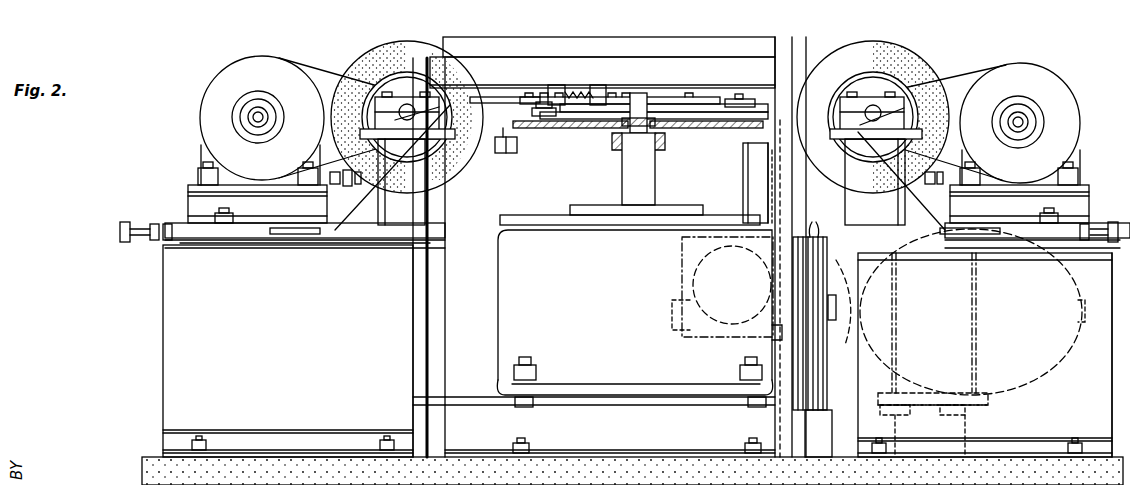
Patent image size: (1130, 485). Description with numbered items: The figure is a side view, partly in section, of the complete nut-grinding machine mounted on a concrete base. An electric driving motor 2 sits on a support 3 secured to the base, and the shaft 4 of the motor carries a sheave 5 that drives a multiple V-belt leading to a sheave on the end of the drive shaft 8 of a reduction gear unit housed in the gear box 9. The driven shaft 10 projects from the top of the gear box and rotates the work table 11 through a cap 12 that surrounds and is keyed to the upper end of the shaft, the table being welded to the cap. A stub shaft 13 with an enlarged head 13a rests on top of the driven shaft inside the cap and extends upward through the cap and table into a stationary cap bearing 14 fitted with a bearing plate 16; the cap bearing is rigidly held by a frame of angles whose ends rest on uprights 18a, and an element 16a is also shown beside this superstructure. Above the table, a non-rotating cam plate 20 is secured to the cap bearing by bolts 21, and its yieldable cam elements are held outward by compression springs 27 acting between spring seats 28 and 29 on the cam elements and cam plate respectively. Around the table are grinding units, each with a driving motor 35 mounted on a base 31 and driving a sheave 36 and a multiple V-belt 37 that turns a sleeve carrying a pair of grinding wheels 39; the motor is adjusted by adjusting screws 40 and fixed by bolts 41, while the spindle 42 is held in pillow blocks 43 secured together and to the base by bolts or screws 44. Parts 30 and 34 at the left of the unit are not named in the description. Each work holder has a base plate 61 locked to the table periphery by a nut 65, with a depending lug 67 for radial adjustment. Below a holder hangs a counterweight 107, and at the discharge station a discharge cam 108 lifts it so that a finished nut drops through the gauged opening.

The electric driving motor 2 is at (1028, 380).
The support 3 is at (972, 412).
The shaft 4 is at (836, 308).
The sheave 5 is at (1090, 350).
The drive shaft 8 is at (780, 338).
The gear box 9 is at (515, 299).
The driven shaft 10 is at (633, 192).
The work table 11 is at (588, 128).
The cap 12 is at (660, 148).
The stub shaft 13 is at (648, 100).
The enlarged head 13a is at (662, 138).
The stationary cap bearing 14 is at (640, 95).
The bearing plate 16 is at (612, 66).
The upright 16a is at (782, 205).
The uprights 18a is at (438, 290).
The cam plate 20 is at (692, 110).
The bolts 21 is at (688, 100).
The compression springs 27 is at (568, 88).
The spring seat 28 is at (560, 85).
The spring seat 29 is at (600, 82).
The left base box 30 is at (183, 316).
The base 31 is at (310, 230).
The adjusting screw 34 is at (146, 240).
The driving motor 35 is at (212, 106).
The sheave 36 is at (242, 117).
The multiple V-belt 37 is at (345, 78).
The grinding wheels 39 is at (385, 60).
The adjusting screws 40 is at (340, 170).
The bolts 41 is at (312, 188).
The spindle 42 is at (406, 118).
The pillow blocks 43 is at (418, 125).
The bolts or screws 44 is at (388, 96).
The base plate 61 is at (573, 137).
The nut 65 is at (520, 150).
The depending lug 67 is at (812, 330).
The counterweight 107 is at (750, 148).
The discharge cam 108 is at (762, 172).